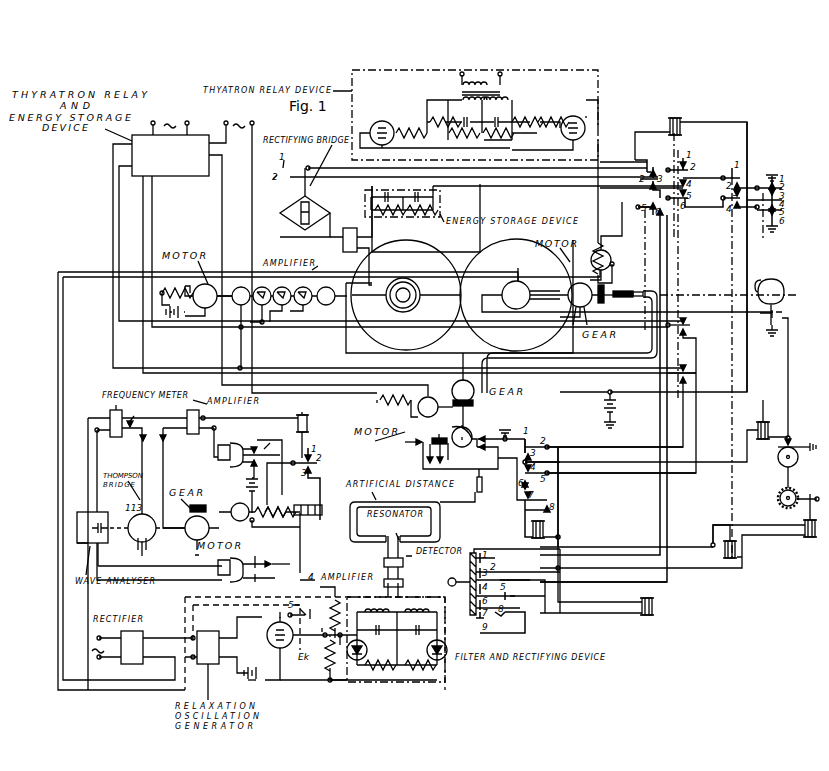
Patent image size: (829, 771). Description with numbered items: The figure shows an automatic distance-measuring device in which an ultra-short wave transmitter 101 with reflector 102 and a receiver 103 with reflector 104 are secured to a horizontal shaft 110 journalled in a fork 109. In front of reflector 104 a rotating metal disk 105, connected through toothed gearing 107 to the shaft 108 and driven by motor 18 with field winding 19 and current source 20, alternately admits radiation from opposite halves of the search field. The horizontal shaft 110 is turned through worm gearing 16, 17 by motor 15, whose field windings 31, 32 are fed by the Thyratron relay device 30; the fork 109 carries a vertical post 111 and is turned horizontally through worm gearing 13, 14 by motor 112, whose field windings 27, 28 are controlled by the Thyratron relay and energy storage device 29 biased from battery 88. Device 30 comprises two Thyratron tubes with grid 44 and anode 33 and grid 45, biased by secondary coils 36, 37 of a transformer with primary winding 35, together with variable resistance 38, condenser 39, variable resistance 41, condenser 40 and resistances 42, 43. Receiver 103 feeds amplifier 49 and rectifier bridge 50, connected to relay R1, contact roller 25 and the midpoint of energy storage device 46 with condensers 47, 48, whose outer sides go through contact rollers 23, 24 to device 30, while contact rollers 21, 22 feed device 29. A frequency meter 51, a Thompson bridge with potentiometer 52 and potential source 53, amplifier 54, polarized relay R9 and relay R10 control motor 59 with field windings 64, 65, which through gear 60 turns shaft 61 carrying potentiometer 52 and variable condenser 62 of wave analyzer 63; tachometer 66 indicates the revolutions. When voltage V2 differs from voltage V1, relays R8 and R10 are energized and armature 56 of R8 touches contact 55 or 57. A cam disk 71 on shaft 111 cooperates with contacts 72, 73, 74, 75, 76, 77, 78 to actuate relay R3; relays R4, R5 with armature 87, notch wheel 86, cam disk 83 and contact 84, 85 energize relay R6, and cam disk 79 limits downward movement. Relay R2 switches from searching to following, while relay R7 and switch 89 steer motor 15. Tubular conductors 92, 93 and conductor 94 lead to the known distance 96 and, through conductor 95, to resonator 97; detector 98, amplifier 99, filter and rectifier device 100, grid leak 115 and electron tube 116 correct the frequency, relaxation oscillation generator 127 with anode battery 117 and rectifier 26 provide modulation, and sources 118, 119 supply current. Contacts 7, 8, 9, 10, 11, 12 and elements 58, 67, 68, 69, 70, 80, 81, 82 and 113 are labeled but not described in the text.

The contact 7 is at (681, 313).
The contact 8 is at (682, 321).
The contact 9 is at (621, 401).
The contact 10 is at (682, 361).
The contact 11 is at (689, 368).
The contact 12 is at (622, 412).
The worm gearing 13 is at (472, 404).
The worm gearing 14 is at (454, 388).
The motor 15 is at (591, 255).
The worm gearing 16 is at (603, 288).
The worm gearing 17 is at (578, 283).
The motor 18 is at (208, 300).
The field winding 19 is at (176, 290).
The source of current 20 is at (178, 320).
The contact roller 21 is at (233, 321).
The contact roller 22 is at (260, 299).
The contact roller 23 is at (280, 298).
The contact roller 24 is at (301, 293).
The contact roller 25 is at (298, 290).
The high voltage rectifier 26 is at (146, 647).
The field winding 27 is at (383, 407).
The field winding 28 is at (399, 401).
The Thyratron relay and energy storage device 29 is at (174, 176).
The Thyratron relay device 30 is at (355, 126).
The field winding 31 is at (596, 219).
The field winding 32 is at (600, 260).
The anode 33 is at (387, 125).
The primary winding 35 is at (459, 85).
The secondary winding 36 is at (461, 100).
The secondary winding 37 is at (499, 100).
The variable resistance 38 is at (445, 116).
The condenser 39 is at (466, 116).
The condenser 40 is at (497, 116).
The variable resistance 41 is at (527, 116).
The resistance 42 is at (464, 138).
The resistance 43 is at (498, 138).
The grid 44 is at (411, 127).
The grid 45 is at (548, 128).
The energy storage device 46 is at (553, 116).
The condenser 47 is at (388, 196).
The condenser 48 is at (417, 196).
The amplifier 49 is at (351, 235).
The rectifier bridge 50 is at (299, 212).
The frequency meter 51 is at (115, 450).
The potentiometer 52 is at (137, 529).
The source of potential 53 is at (143, 550).
The amplifier 54 is at (230, 452).
The contact 55 is at (269, 461).
The armature 56 is at (261, 447).
The contact 57 is at (260, 466).
The battery 58 is at (241, 483).
The motor 59 is at (237, 507).
The gear 60 is at (206, 513).
The shaft 61 is at (192, 535).
The variable condenser 62 is at (92, 486).
The wave analyzer 63 is at (78, 545).
The field winding 64 is at (270, 506).
The field winding 65 is at (275, 534).
The tachometer 66 is at (308, 503).
The contact 67 is at (262, 558).
The contact 68 is at (277, 560).
The contact 69 is at (265, 581).
The resistor 70 is at (336, 612).
The cam disk 71 is at (471, 427).
The spring contact 72 is at (469, 448).
The contact 73 is at (501, 439).
The contact 74 is at (440, 441).
The contact 75 is at (435, 461).
The spring contact 76 is at (474, 471).
The contact 77 is at (413, 438).
The contact 78 is at (445, 461).
The cam disk 79 is at (783, 285).
The contact 80 is at (767, 316).
The ground 81 is at (768, 332).
The contact arm 82 is at (788, 309).
The cam disk 83 is at (781, 466).
The contact 84 is at (796, 436).
The contact 85 is at (809, 453).
The notch wheel 86 is at (778, 495).
The armature 87 is at (810, 501).
The battery 88 is at (615, 406).
The switch 89 is at (503, 582).
The tubular conductor 92 is at (546, 287).
The tubular conductor 93 is at (649, 345).
The conductor 94 is at (463, 495).
The conductor 95 is at (440, 527).
The known distance 96 is at (394, 514).
The resonator 97 is at (395, 531).
The detector 98 is at (403, 562).
The amplifier 99 is at (403, 583).
The filtering and rectifier device 100 is at (445, 638).
The transmitter 101 is at (627, 290).
The reflector 102 is at (540, 245).
The receiver 103 is at (417, 297).
The reflector 104 is at (406, 349).
The rotating metal disk 105 is at (417, 291).
The toothed gearing 107 is at (389, 293).
The shaft 108 is at (459, 296).
The fork 109 is at (571, 334).
The horizontal shaft 110 is at (677, 293).
The vertical post 111 is at (461, 362).
The motor 112 is at (433, 411).
The AC source 113 is at (293, 249).
The grid leak 115 is at (313, 652).
The electron tube 116 is at (276, 630).
The anode battery 117 is at (256, 681).
The source of current 118 is at (97, 656).
The source of current 119 is at (170, 120).
The relaxation oscillation generator 127 is at (223, 658).
The relay R1 is at (308, 202).
The relay R2 is at (679, 118).
The relay R3 is at (531, 534).
The step relay R4 is at (806, 540).
The relay R5 is at (638, 546).
The relay R6 is at (760, 425).
The relay R7 is at (656, 612).
The relay R8 is at (220, 463).
The polarized relay R9 is at (220, 584).
The relay R10 is at (311, 435).
The voltage V1 is at (154, 415).
The potentiometer voltage V2 is at (153, 442).